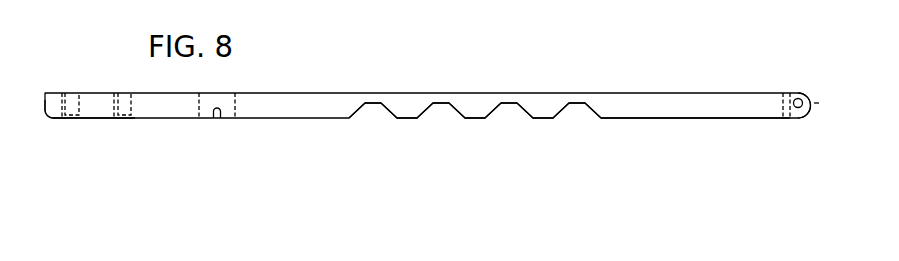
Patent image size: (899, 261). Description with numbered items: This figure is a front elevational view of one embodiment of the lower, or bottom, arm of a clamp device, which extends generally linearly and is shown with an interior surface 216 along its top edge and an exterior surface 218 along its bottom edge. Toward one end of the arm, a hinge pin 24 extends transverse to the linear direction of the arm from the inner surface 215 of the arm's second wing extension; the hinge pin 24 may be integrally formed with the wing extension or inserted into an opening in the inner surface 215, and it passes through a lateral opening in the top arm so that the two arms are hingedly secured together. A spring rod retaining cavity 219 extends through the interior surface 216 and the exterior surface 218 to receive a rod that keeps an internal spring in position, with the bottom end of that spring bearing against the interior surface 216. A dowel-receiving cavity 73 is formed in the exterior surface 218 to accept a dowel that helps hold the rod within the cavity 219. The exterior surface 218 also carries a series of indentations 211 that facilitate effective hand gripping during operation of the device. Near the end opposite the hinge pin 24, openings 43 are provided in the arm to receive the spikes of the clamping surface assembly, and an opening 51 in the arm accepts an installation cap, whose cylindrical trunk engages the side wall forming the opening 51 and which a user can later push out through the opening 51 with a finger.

The openings 43 is at (69, 80).
The opening 51 is at (90, 132).
The dowel-receiving cavity 73 is at (213, 130).
The spring rod retaining cavity 219 is at (230, 130).
The indentations 211 is at (442, 127).
The interior surface 216 is at (486, 82).
The exterior surface 218 is at (625, 127).
The hinge pin 24 is at (796, 119).
The inner surface 215 is at (813, 116).